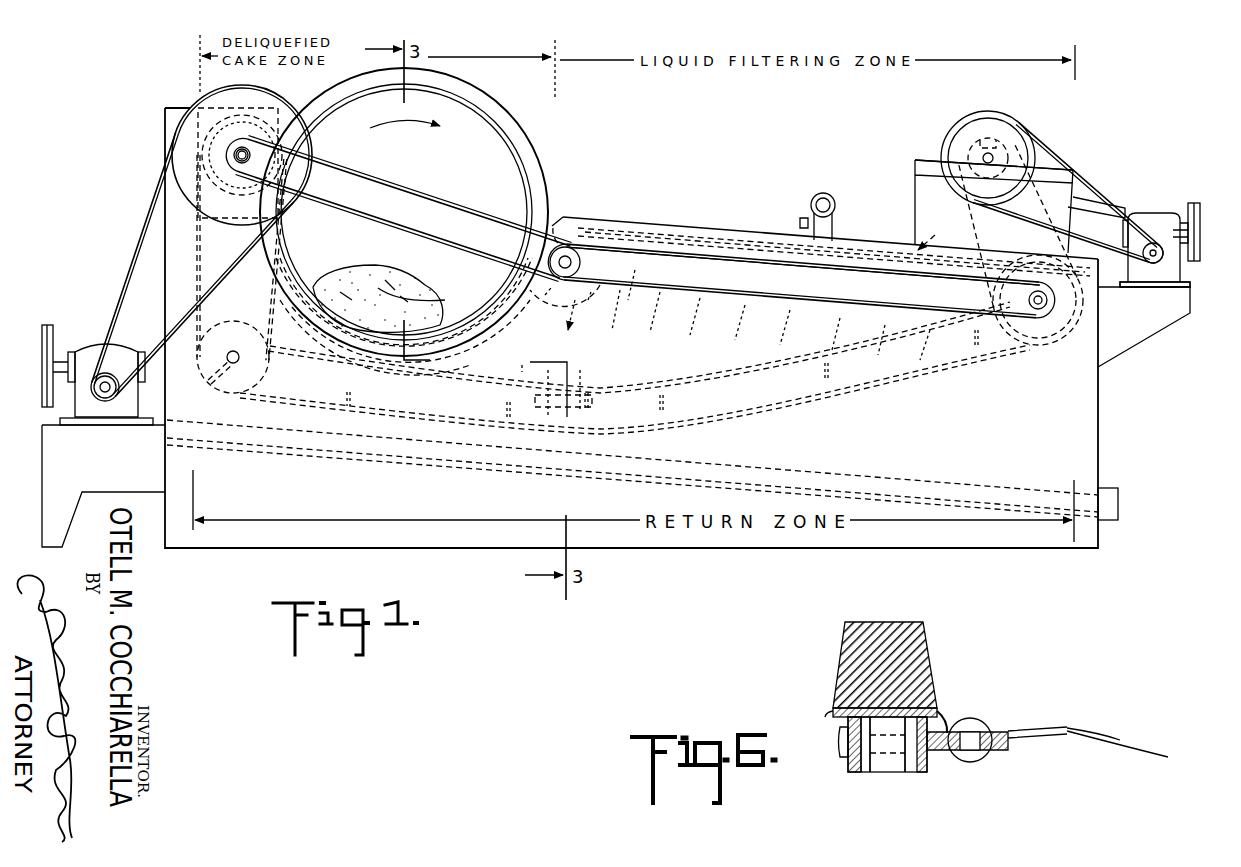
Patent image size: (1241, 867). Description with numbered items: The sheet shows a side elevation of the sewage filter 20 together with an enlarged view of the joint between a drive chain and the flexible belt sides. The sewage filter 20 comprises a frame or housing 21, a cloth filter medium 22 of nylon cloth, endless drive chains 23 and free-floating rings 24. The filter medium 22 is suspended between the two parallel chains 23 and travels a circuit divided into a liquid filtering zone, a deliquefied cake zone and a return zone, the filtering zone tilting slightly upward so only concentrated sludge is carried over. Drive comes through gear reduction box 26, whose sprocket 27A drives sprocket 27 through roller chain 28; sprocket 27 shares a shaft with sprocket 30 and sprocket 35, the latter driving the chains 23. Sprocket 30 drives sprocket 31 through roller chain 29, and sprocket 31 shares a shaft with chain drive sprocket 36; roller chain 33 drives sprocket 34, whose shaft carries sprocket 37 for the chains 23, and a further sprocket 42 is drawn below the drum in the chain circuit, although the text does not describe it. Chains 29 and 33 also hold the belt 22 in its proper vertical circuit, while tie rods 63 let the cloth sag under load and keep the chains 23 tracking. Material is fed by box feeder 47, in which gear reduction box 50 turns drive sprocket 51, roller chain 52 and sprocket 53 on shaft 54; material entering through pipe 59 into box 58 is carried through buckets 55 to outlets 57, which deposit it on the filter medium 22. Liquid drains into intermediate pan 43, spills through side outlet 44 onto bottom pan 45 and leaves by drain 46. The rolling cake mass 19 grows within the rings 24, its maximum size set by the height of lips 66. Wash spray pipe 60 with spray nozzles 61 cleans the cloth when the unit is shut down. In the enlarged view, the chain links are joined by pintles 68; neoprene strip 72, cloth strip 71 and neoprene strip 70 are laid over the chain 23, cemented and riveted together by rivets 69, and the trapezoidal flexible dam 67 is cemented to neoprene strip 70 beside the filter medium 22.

In FIG. 1, the rolling cake mass 19 is at (385, 290).
In FIG. 1, the sewage filter 20 is at (645, 217).
In FIG. 1, the frame or housing 21 is at (1098, 418).
In FIG. 1, the cloth filter medium 22 is at (778, 255).
In FIG. 6, the cloth filter medium 22 is at (1120, 750).
In FIG. 6, the endless drive chains 23 is at (886, 772).
In FIG. 1, the free-floating rings 24 is at (547, 150).
In FIG. 1, the gear reduction box 26 is at (95, 345).
In FIG. 1, the sprocket 27 is at (198, 122).
In FIG. 1, the sprocket 27A is at (106, 401).
In FIG. 1, the roller chain 28 is at (140, 230).
In FIG. 1, the roller chain 29 is at (433, 198).
In FIG. 1, the sprocket 30 is at (270, 98).
In FIG. 1, the sprocket 31 is at (553, 285).
In FIG. 1, the roller chain 33 is at (640, 288).
In FIG. 1, the sprocket 34 is at (1030, 318).
In FIG. 1, the sprocket 35 is at (214, 151).
In FIG. 1, the chain drive sprocket 36 is at (583, 302).
In FIG. 1, the sprocket 37 is at (1055, 338).
In FIG. 1, the sprocket 42 is at (283, 383).
In FIG. 1, the intermediate pan 43 is at (710, 368).
In FIG. 1, the side outlet 44 is at (592, 403).
In FIG. 1, the bottom pan 45 is at (450, 468).
In FIG. 1, the drain 46 is at (1112, 520).
In FIG. 1, the box feeder 47 is at (1093, 148).
In FIG. 1, the gear reduction box 50 is at (1188, 270).
In FIG. 1, the drive sprocket 51 is at (1150, 288).
In FIG. 1, the roller chain 52 is at (1135, 213).
In FIG. 1, the sprocket 53 is at (993, 130).
In FIG. 1, the shaft 54 is at (982, 160).
In FIG. 1, the buckets 55 is at (1022, 215).
In FIG. 1, the outlets 57 is at (915, 205).
In FIG. 1, the box 58 is at (1078, 216).
In FIG. 1, the pipe 59 is at (1105, 182).
In FIG. 1, the wash spray pipe 60 is at (826, 194).
In FIG. 1, the spray nozzles 61 is at (800, 222).
In FIG. 1, the tie rods 63 is at (355, 397).
In FIG. 1, the lips 66 is at (487, 130).
In FIG. 6, the flexible dam 67 is at (870, 648).
In FIG. 6, the pintles 68 is at (848, 755).
In FIG. 6, the rivets 69 is at (975, 725).
In FIG. 6, the neoprene strip 70 is at (833, 710).
In FIG. 6, the cloth strip 71 is at (840, 714).
In FIG. 6, the neoprene strip 72 is at (848, 728).